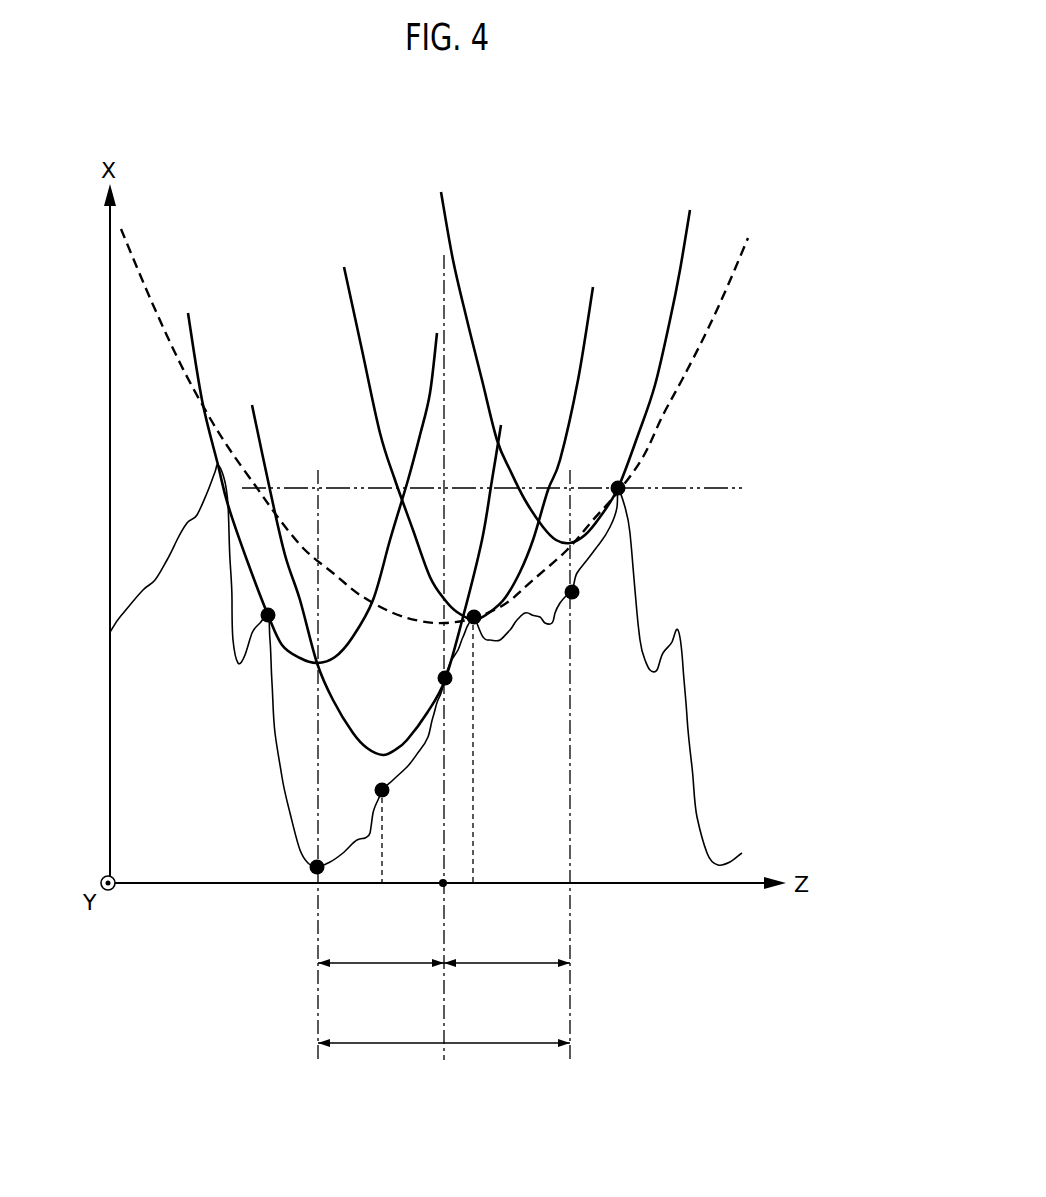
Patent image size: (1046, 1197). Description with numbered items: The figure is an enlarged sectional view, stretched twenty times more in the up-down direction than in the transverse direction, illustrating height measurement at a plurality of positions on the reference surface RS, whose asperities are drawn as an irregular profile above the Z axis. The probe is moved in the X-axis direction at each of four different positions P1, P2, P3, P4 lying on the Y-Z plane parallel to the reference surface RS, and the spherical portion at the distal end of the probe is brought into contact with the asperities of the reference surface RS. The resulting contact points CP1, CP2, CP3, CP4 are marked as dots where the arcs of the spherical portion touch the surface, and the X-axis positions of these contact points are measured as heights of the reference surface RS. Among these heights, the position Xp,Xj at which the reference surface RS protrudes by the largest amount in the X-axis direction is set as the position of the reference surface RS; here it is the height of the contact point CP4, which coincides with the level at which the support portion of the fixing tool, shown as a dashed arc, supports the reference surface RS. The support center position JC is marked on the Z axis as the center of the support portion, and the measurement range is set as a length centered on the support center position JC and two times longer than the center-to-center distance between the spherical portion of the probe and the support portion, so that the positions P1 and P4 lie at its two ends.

The reference surface RS is at (755, 637).
The position of reference surface Xp,Xj is at (523, 490).
The contact point CP1 is at (268, 615).
The contact point CP2 is at (445, 678).
The contact point CP3 is at (474, 617).
The contact point CP4 is at (618, 488).
The measurement position P1 is at (306, 765).
The measurement position P2 is at (381, 848).
The measurement position P3 is at (470, 769).
The measurement position P4 is at (584, 765).
The support center position JC is at (443, 883).